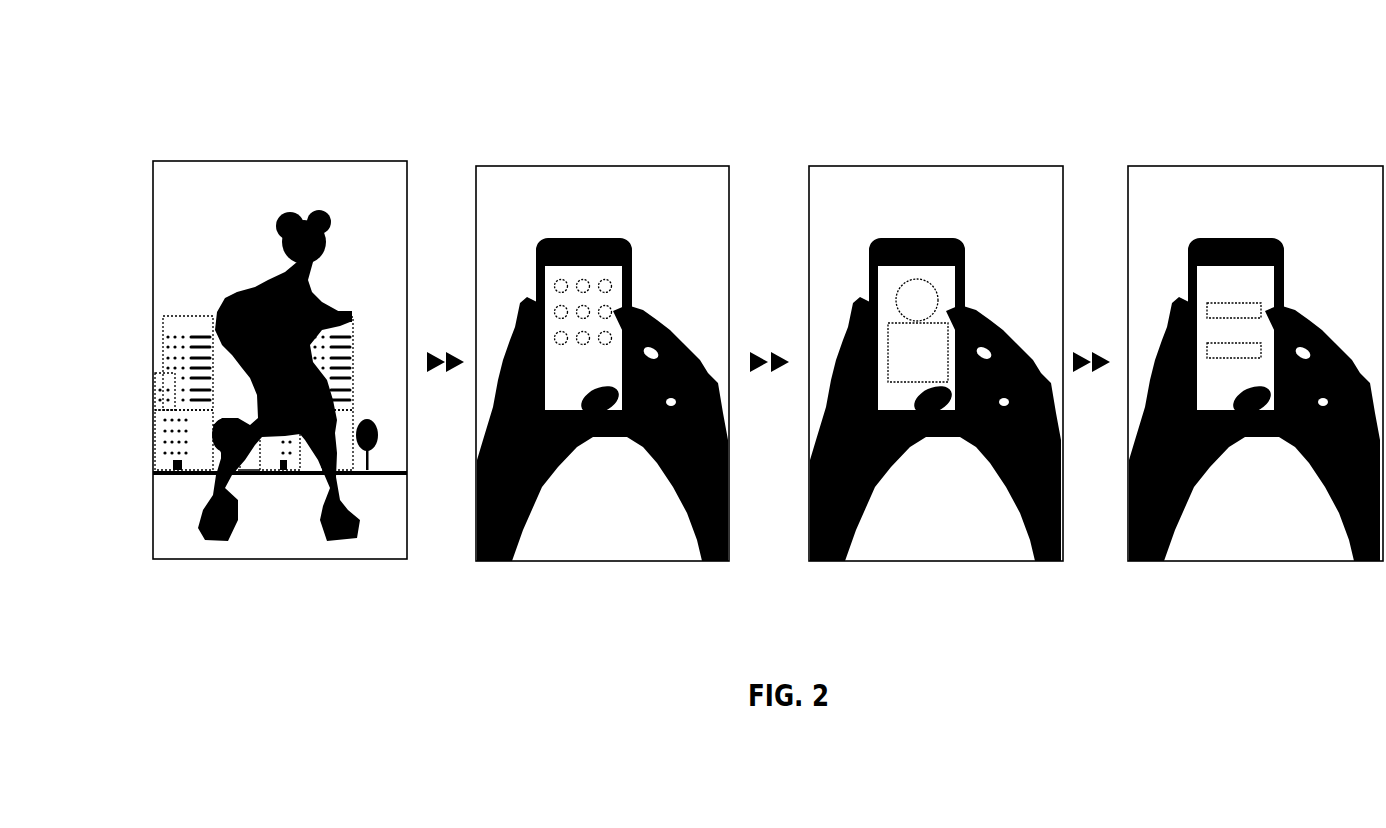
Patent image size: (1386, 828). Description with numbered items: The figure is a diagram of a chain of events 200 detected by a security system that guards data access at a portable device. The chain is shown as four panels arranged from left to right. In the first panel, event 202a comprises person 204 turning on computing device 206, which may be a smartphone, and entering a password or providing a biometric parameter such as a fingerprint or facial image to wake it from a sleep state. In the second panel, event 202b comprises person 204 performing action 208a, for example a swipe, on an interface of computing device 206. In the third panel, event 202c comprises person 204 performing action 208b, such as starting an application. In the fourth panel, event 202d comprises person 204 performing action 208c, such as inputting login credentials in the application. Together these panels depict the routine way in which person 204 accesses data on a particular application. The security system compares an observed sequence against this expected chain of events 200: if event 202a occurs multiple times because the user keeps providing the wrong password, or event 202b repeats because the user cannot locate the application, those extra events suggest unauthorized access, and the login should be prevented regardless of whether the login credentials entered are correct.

The chain of events 200 is at (778, 58).
The event 202a is at (224, 161).
The event 202b is at (548, 166).
The event 202c is at (857, 167).
The event 202d is at (1180, 167).
The person 204 is at (1353, 548).
The computing device 206 is at (1277, 207).
The action 208a is at (592, 272).
The action 208b is at (915, 282).
The action 208c is at (1242, 272).